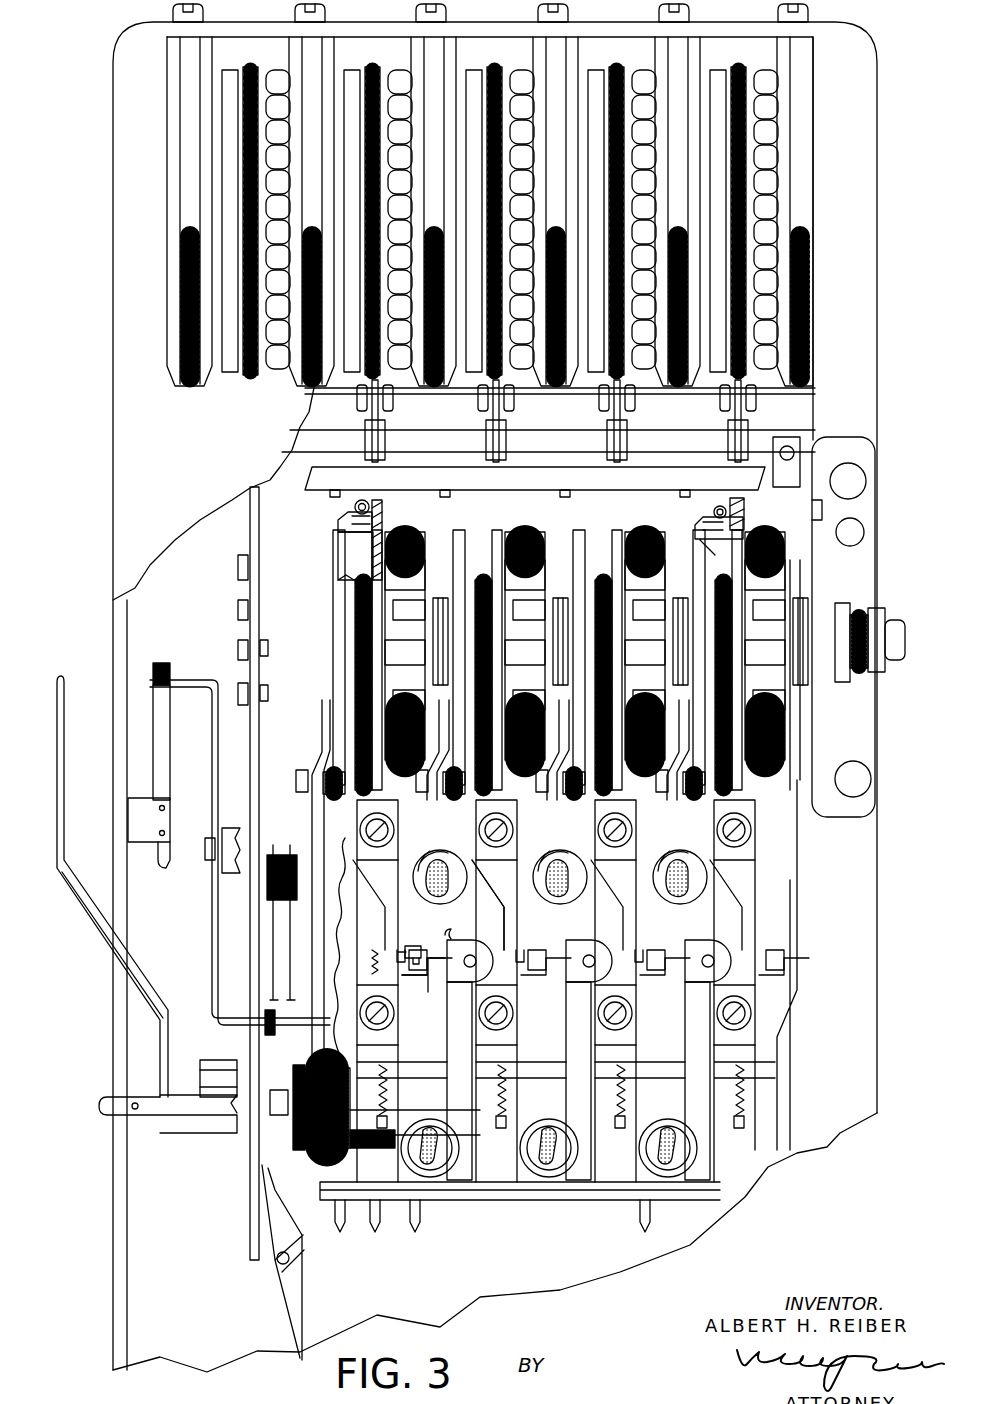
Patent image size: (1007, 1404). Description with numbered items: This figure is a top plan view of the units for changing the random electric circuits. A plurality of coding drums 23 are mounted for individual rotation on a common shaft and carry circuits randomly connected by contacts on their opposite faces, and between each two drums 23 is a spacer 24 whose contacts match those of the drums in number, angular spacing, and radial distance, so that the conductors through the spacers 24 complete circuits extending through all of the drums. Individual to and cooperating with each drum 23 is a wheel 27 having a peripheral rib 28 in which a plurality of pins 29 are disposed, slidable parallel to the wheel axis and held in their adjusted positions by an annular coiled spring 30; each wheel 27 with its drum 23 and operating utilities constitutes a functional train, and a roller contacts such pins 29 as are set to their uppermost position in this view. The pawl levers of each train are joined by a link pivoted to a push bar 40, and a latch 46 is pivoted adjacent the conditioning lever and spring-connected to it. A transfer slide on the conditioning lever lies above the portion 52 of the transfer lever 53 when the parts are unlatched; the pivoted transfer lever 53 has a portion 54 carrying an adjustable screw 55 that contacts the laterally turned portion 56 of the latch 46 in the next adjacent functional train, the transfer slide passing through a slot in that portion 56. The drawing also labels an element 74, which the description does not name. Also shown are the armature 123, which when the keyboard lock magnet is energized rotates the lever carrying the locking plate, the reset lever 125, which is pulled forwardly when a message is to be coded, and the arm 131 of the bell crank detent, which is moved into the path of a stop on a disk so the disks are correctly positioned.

The coding drum 23 is at (352, 318).
The spacer 24 is at (670, 56).
The wheel 27 is at (380, 638).
The peripheral rib 28 is at (753, 511).
The pin 29 is at (338, 525).
The annular coiled spring 30 is at (714, 513).
The push bar 40 is at (260, 737).
The latch 46 is at (560, 1010).
The portion of transfer lever 52 is at (493, 903).
The transfer lever 53 is at (388, 938).
The portion of transfer lever 54 is at (405, 952).
The adjustable screw 55 is at (433, 960).
The laterally turned portion 56 is at (447, 935).
The cam 74 is at (700, 882).
The armature 123 is at (323, 1142).
The reset lever 125 is at (95, 918).
The arm of bell crank detent 131 is at (557, 720).